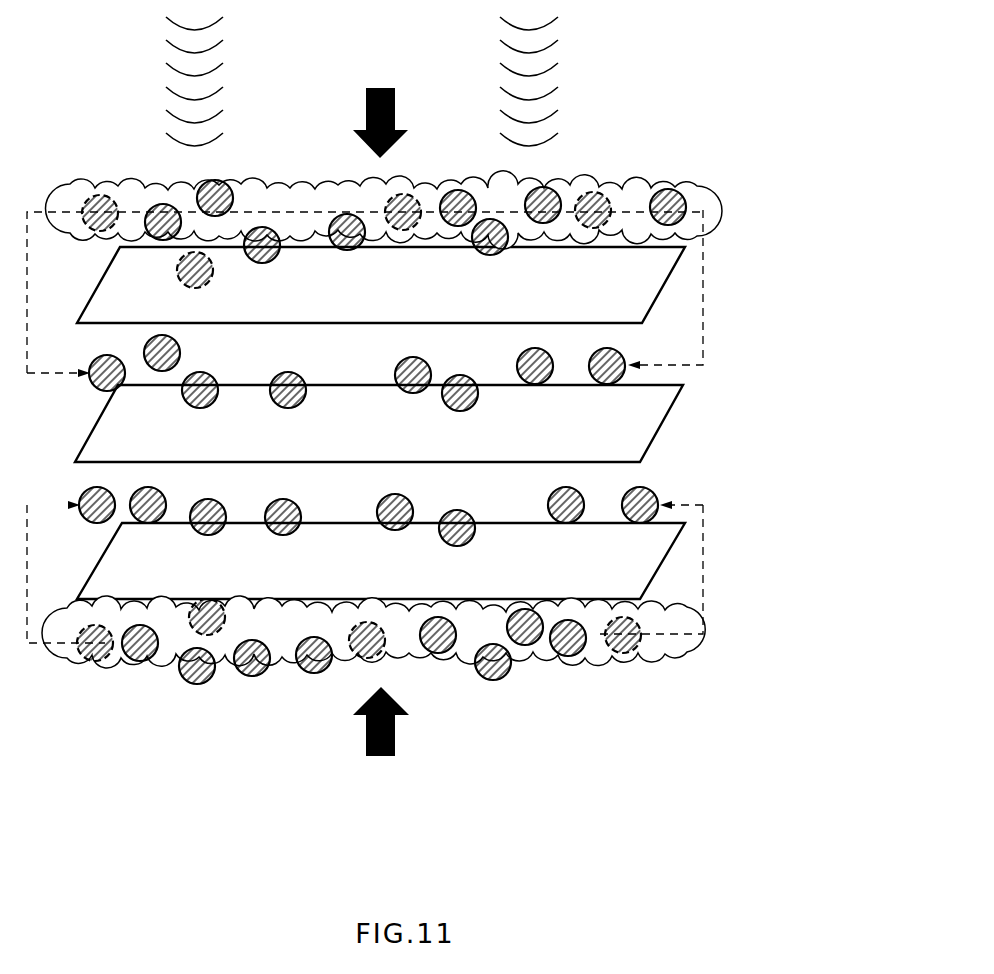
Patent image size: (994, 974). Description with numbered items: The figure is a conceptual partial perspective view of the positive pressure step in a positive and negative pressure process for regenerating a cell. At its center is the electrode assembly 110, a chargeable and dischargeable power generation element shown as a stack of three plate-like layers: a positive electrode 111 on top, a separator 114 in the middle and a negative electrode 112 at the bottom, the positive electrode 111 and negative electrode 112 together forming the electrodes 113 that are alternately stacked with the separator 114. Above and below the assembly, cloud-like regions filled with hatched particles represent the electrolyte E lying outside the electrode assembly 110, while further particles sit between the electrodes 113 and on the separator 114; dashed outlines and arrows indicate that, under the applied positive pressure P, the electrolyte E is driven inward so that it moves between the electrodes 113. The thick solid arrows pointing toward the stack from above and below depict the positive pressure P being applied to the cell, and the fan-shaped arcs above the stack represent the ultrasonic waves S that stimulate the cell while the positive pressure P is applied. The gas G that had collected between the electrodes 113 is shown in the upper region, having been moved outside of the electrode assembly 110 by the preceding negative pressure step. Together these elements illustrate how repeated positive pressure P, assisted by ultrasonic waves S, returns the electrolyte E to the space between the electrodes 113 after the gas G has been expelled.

The electrode assembly 110 is at (657, 126).
The positive electrode 111 is at (645, 279).
The negative electrode 112 is at (645, 556).
The electrode 113 is at (778, 285).
The separator 114 is at (110, 420).
The ultrasonic waves S is at (192, 97).
The positive pressure P is at (381, 88).
The gas G is at (271, 188).
The electrolyte E is at (459, 192).